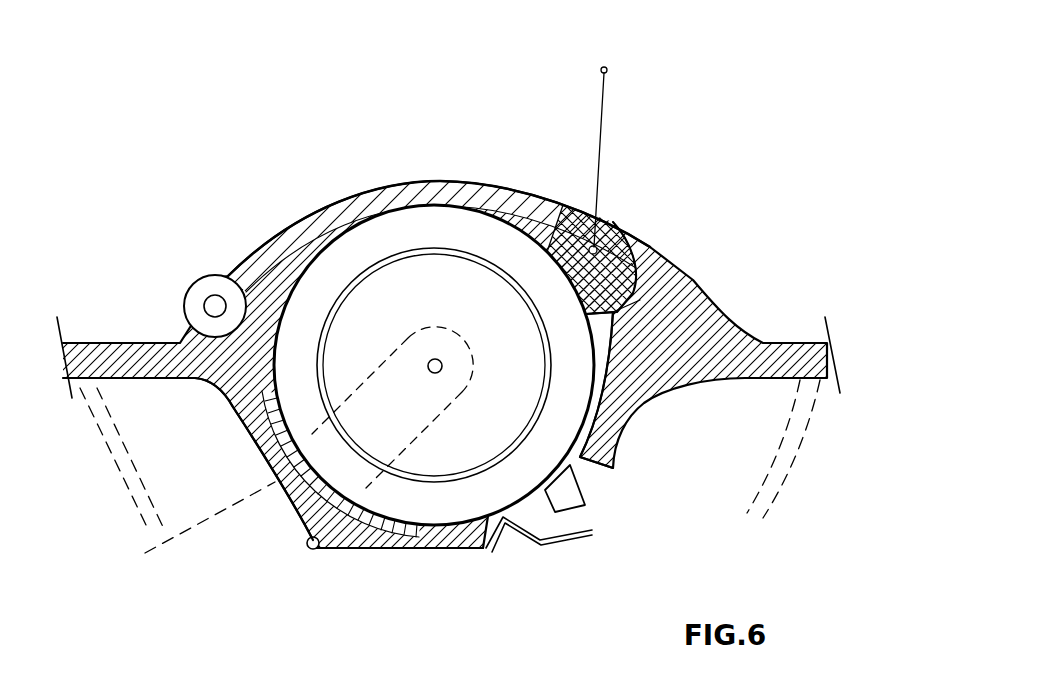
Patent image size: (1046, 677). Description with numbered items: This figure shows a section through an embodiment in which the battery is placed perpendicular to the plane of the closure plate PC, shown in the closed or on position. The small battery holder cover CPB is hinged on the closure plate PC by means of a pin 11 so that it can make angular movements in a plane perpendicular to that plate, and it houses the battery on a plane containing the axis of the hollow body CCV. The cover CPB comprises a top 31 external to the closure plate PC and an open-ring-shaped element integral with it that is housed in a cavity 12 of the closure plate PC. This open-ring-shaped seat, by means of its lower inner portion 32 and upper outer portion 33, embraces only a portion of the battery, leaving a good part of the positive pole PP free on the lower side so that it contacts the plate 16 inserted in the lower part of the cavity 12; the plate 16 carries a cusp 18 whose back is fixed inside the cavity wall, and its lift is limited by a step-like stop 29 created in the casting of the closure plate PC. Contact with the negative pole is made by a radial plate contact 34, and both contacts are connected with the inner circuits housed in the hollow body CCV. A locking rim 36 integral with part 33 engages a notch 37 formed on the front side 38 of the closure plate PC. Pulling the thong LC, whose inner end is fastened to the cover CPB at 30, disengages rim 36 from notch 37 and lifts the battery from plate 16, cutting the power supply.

The pin 11 is at (214, 306).
The cavity 12 is at (662, 298).
The plate 16 is at (367, 550).
The cusp 18 is at (510, 523).
The step-like stop 29 is at (585, 505).
The fastening point of thong 30 is at (592, 247).
The top 31 is at (323, 207).
The lower inner portion 32 is at (233, 397).
The upper outer portion 33 is at (630, 233).
The radial plate contact 34 is at (178, 527).
The locking rim 36 is at (585, 245).
The notch 37 is at (657, 280).
The front side 38 is at (645, 290).
The closure plate PC is at (93, 350).
The small battery holder cover CPB is at (523, 338).
The thong LC is at (613, 117).
The positive pole PP is at (457, 500).
The hollow body CCV is at (783, 457).